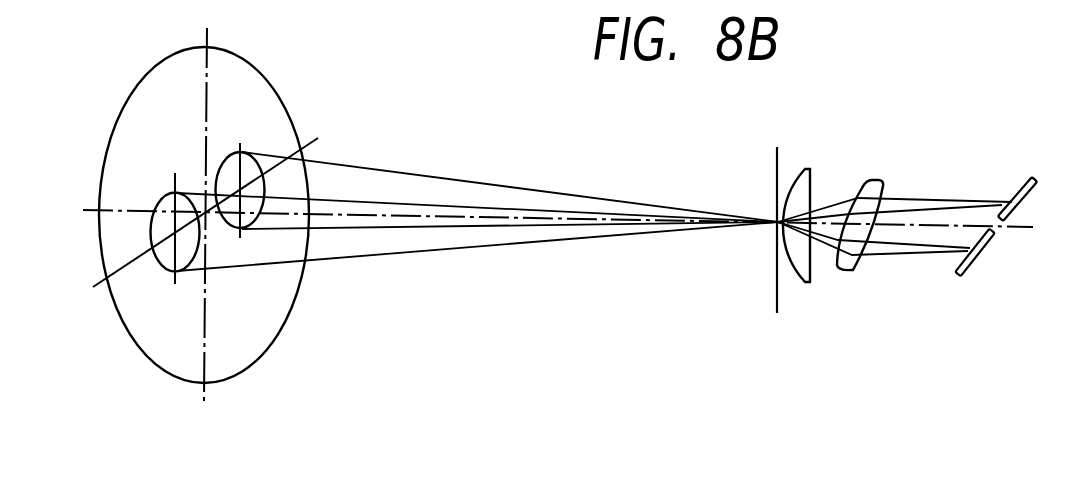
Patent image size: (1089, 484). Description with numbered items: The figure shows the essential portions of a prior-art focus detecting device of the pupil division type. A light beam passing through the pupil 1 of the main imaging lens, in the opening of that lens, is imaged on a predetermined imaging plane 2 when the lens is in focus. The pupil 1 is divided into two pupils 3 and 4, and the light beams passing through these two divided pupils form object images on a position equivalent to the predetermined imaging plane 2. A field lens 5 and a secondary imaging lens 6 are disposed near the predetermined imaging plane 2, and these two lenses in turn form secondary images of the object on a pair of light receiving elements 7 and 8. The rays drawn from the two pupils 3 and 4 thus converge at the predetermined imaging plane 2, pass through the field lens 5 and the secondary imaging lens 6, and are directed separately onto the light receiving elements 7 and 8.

The pupil 1 is at (120, 113).
The predetermined imaging plane 2 is at (781, 150).
The pupil 3 is at (150, 262).
The pupil 4 is at (232, 154).
The field lens 5 is at (805, 282).
The secondary imaging lens 6 is at (850, 273).
The light receiving element 7 is at (1038, 181).
The light receiving element 8 is at (977, 268).